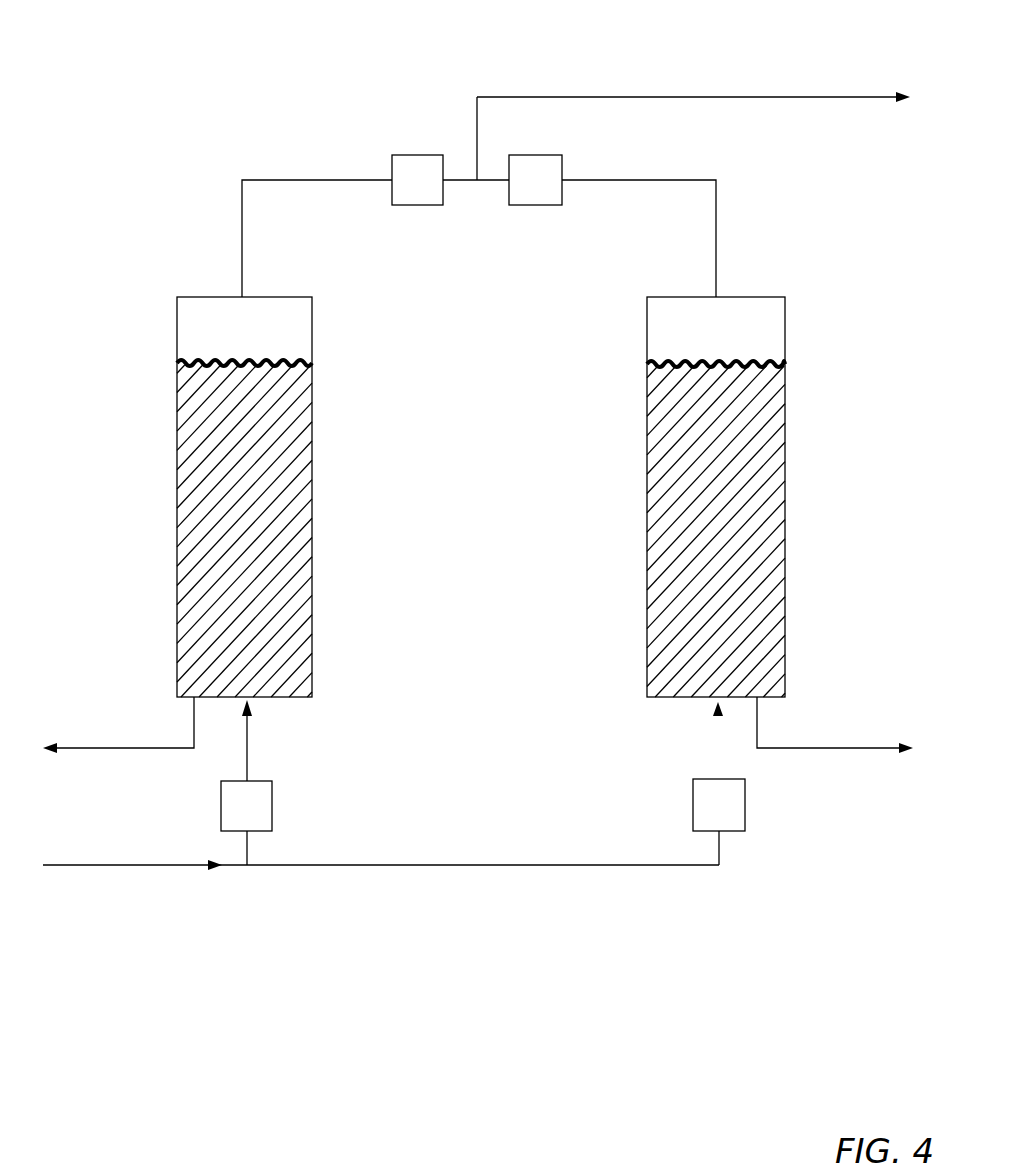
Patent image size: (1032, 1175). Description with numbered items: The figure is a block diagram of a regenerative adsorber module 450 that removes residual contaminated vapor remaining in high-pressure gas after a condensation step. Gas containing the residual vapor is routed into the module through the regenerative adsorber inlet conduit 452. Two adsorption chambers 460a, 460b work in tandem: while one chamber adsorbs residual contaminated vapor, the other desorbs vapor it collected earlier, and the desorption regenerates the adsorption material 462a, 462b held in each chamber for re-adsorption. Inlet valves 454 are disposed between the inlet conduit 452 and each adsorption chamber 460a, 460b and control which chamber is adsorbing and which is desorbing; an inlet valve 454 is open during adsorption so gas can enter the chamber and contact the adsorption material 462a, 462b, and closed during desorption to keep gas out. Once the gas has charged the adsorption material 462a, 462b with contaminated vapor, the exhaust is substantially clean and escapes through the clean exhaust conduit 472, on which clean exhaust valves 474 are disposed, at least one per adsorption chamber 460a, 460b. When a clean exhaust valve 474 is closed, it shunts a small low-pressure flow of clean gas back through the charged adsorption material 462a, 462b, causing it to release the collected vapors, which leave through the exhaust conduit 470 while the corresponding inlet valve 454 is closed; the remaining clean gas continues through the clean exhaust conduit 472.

The regenerative adsorber module 450 is at (182, 120).
The regenerative adsorber inlet conduit 452 is at (123, 865).
The inlet valves 454 is at (690, 809).
The adsorption chamber 460a is at (177, 324).
The adsorption chamber 460b is at (785, 318).
The adsorption material 462a is at (256, 489).
The adsorption material 462b is at (726, 485).
The exhaust conduit 470 is at (78, 745).
The clean exhaust conduit 472 is at (594, 97).
The clean exhaust valves 474 is at (413, 205).